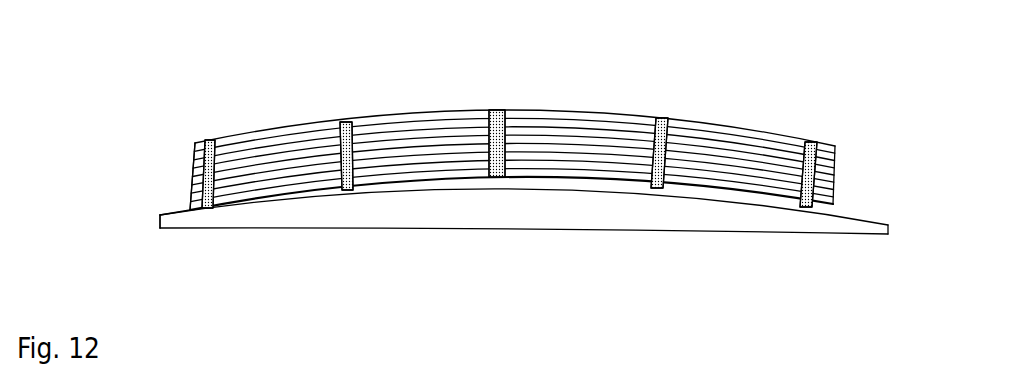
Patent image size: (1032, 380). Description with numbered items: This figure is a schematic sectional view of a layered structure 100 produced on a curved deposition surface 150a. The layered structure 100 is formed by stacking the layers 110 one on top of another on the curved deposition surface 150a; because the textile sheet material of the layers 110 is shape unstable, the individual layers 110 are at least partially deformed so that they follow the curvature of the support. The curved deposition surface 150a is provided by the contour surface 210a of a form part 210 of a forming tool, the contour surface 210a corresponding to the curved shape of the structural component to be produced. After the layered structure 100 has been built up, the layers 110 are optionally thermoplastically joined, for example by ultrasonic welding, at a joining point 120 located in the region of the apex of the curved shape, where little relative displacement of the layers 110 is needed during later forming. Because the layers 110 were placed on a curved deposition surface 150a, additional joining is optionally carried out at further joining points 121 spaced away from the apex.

The layered structure 100 is at (746, 60).
The layers 110 is at (836, 156).
The joining point 120 is at (497, 103).
The further joining points 121 is at (210, 130).
The form part 210 is at (407, 190).
The curved deposition surface 150a is at (170, 212).
The contour surface 210a is at (170, 212).